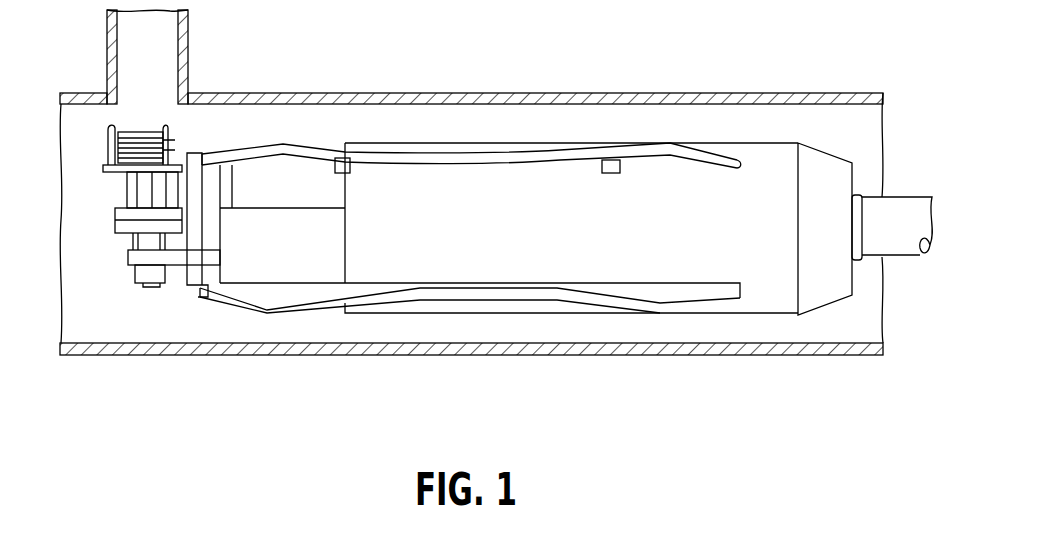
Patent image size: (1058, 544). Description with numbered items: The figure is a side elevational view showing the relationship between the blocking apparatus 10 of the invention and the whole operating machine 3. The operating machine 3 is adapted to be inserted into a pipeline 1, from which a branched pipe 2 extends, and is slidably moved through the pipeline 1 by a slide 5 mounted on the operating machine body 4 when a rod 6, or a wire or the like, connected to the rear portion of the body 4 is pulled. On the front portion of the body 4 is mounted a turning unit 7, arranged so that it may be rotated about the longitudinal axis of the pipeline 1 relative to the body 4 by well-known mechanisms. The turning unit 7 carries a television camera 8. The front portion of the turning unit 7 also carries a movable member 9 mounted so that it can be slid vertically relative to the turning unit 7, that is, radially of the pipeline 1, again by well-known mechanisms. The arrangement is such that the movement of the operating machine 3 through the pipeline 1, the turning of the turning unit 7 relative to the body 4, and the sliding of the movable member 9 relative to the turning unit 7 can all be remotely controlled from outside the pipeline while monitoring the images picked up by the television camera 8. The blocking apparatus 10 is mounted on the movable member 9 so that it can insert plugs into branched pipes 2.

The pipeline 1 is at (467, 100).
The branched pipe 2 is at (188, 50).
The operating machine 3 is at (601, 144).
The operating machine body 4 is at (765, 160).
The slide 5 is at (370, 158).
The rod 6 is at (895, 208).
The turning unit 7 is at (278, 265).
The television camera 8 is at (340, 188).
The movable member 9 is at (186, 262).
The blocking apparatus 10 is at (123, 188).